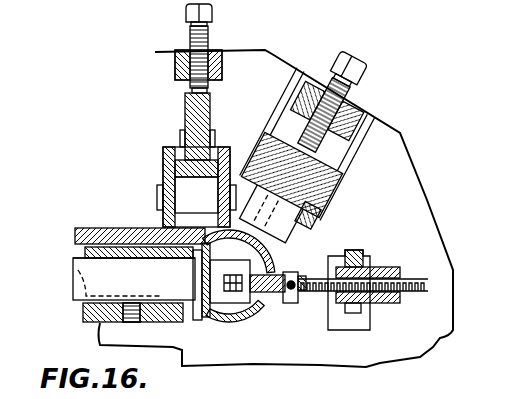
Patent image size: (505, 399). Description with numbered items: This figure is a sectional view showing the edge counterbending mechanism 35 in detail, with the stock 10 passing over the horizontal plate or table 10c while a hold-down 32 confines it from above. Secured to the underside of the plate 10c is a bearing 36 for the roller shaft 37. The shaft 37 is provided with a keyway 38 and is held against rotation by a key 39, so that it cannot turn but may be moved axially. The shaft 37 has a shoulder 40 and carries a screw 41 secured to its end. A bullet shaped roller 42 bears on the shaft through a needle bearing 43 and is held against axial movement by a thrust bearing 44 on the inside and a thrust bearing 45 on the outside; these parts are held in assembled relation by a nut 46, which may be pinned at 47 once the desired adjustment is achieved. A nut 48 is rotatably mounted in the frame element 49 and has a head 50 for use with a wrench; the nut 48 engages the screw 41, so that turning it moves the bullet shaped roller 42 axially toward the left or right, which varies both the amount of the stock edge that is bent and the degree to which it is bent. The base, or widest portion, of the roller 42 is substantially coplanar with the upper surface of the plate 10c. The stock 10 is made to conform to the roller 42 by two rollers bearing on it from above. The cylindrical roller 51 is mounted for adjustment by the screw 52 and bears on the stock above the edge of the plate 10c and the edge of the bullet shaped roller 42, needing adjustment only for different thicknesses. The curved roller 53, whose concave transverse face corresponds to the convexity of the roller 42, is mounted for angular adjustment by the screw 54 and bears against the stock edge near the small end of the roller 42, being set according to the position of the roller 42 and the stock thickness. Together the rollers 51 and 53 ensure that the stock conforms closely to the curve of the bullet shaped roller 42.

The stock 10 is at (72, 232).
The horizontal plate or table 10c is at (118, 228).
The hold-down 32 is at (186, 108).
The edge counterbending mechanism 35 is at (175, 58).
The bearing 36 is at (83, 312).
The roller shaft 37 is at (70, 258).
The keyway 38 is at (73, 274).
The key 39 is at (130, 322).
The shoulder 40 is at (197, 322).
The screw 41 is at (333, 320).
The bullet shaped roller 42 is at (248, 308).
The needle bearing 43 is at (268, 301).
The thrust bearing 44 is at (228, 325).
The thrust bearing 45 is at (298, 255).
The nut 46 is at (287, 267).
The pin 47 is at (298, 300).
The nut 48 is at (372, 305).
The frame element 49 is at (362, 316).
The head 50 is at (392, 268).
The cylindrical roller 51 is at (215, 152).
The screw 52 is at (214, 14).
The curved roller 53 is at (340, 203).
The screw 54 is at (372, 70).